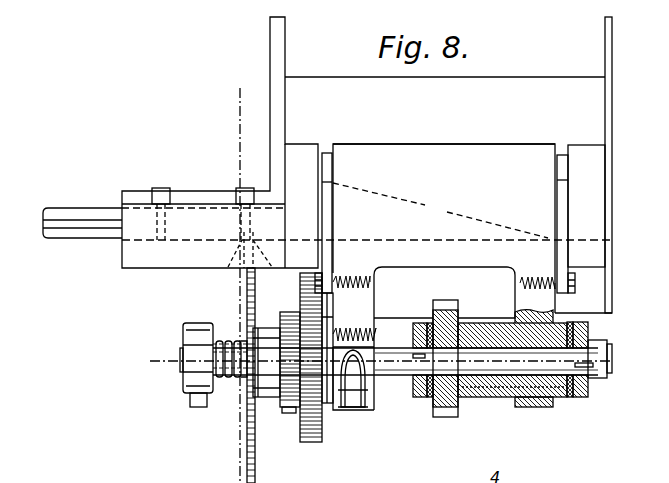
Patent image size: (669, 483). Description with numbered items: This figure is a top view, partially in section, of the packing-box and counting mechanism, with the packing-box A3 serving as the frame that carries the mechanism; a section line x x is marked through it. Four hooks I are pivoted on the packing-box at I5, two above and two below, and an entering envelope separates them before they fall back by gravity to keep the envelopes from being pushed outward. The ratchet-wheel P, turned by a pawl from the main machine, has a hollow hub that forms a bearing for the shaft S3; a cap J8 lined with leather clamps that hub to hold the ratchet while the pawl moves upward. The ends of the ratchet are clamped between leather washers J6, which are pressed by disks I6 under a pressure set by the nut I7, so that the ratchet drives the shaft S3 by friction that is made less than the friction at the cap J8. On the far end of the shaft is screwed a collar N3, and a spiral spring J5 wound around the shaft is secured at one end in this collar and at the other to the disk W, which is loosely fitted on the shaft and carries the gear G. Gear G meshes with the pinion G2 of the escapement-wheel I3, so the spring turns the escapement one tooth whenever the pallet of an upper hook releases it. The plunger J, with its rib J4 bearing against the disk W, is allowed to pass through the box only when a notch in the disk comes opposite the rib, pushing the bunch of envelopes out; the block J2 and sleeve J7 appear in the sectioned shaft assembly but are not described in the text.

The packing-box A3 is at (444, 160).
The bracket block J2 is at (367, 226).
The plunger J is at (62, 213).
The rib J4 is at (108, 230).
The section line x x is at (248, 285).
The hooks I is at (440, 210).
The pivot of hooks I5 is at (318, 288).
The disks I6 is at (413, 322).
The escapement-wheel I3 is at (350, 407).
The leather washers J6 is at (432, 399).
The ratchet-wheel P is at (441, 375).
The sleeve J7 is at (487, 399).
The cap J8 is at (530, 407).
The nut I7 is at (603, 370).
The gear G is at (316, 442).
The pinion G2 is at (287, 414).
The disk W is at (248, 431).
The shaft S3 is at (181, 353).
The collar N3 is at (182, 384).
The spiral spring J5 is at (236, 378).